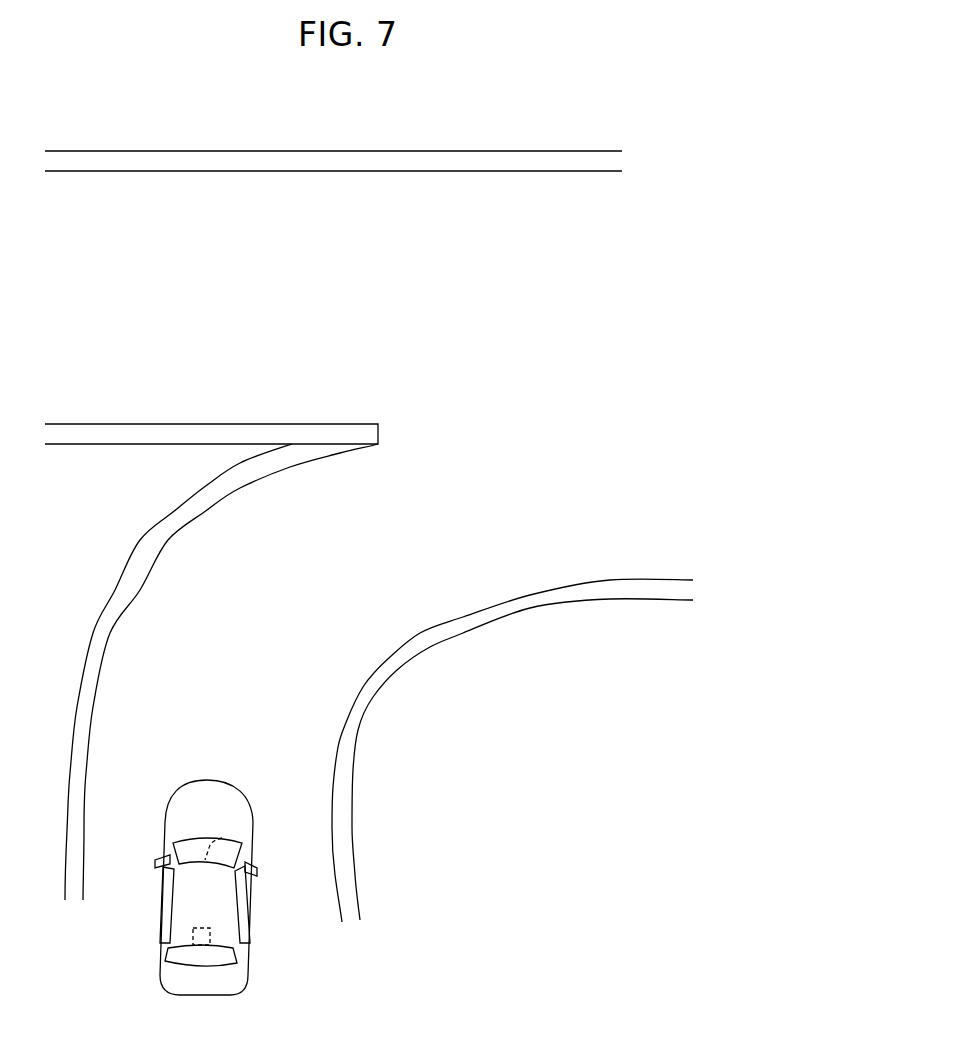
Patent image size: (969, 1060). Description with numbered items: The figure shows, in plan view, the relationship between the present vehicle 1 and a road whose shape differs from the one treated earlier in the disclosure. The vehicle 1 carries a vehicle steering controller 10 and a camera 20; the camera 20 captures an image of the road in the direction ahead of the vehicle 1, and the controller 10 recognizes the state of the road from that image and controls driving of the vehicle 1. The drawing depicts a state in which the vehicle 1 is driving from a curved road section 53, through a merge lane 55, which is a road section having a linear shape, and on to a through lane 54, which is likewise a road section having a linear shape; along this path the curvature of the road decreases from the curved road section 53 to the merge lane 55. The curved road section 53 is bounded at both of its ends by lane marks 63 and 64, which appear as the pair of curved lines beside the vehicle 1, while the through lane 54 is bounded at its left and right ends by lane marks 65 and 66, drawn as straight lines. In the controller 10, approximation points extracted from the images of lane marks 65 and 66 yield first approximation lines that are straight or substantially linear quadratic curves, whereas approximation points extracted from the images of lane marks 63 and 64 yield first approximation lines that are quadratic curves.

The vehicle 1 is at (228, 976).
The vehicle steering controller 10 is at (195, 946).
The camera 20 is at (222, 838).
The curved road section 53 is at (370, 624).
The through lane 54 is at (191, 272).
The merge lane 55 is at (643, 517).
The lane mark 63 is at (103, 634).
The lane mark 64 is at (350, 737).
The lane mark 65 is at (371, 163).
The lane mark 66 is at (85, 433).